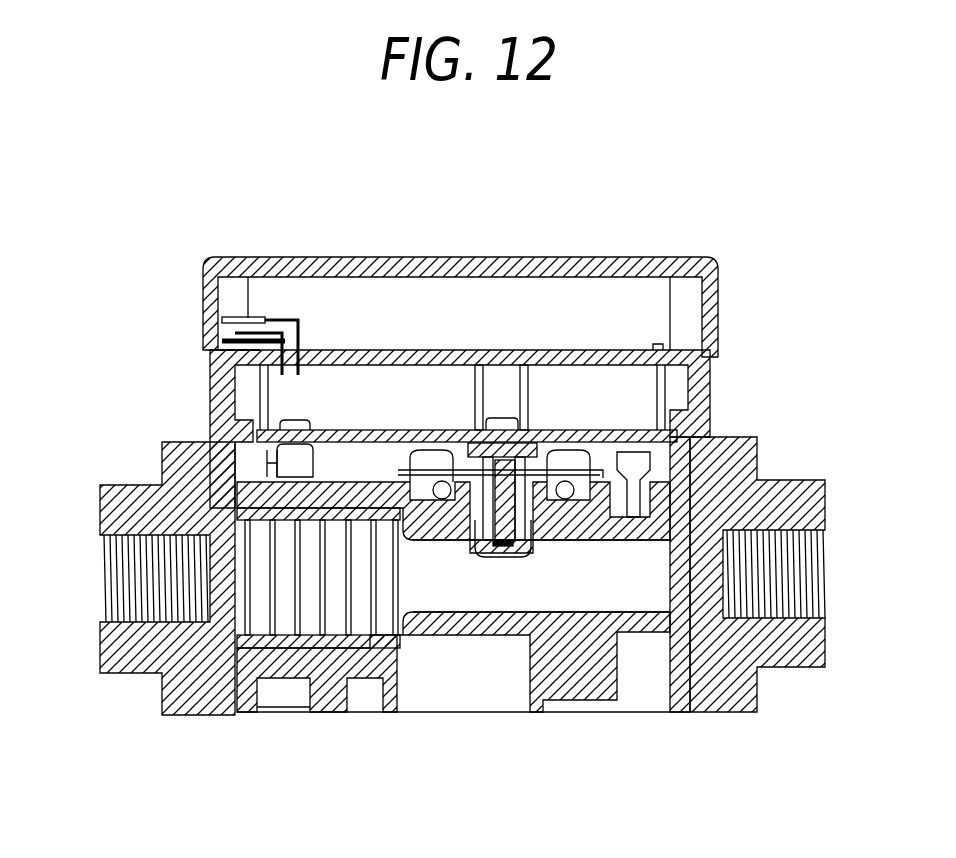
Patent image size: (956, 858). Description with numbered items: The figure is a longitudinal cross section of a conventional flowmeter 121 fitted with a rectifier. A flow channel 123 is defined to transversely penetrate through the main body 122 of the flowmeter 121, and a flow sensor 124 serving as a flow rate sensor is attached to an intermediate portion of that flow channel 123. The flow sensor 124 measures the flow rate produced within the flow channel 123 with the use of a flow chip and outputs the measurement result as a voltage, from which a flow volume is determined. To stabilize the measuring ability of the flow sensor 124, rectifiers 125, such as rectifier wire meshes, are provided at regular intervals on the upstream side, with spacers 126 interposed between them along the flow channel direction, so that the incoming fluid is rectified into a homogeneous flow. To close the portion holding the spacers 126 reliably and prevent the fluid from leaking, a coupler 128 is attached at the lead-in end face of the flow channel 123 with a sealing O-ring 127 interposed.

The flowmeter 121 is at (600, 238).
The main body 122 is at (713, 383).
The flow channel 123 is at (586, 592).
The flow sensor 124 is at (503, 553).
The rectifier 125 is at (323, 607).
The spacer 126 is at (310, 640).
The sealing O-ring 127 is at (245, 517).
The coupler 128 is at (128, 485).